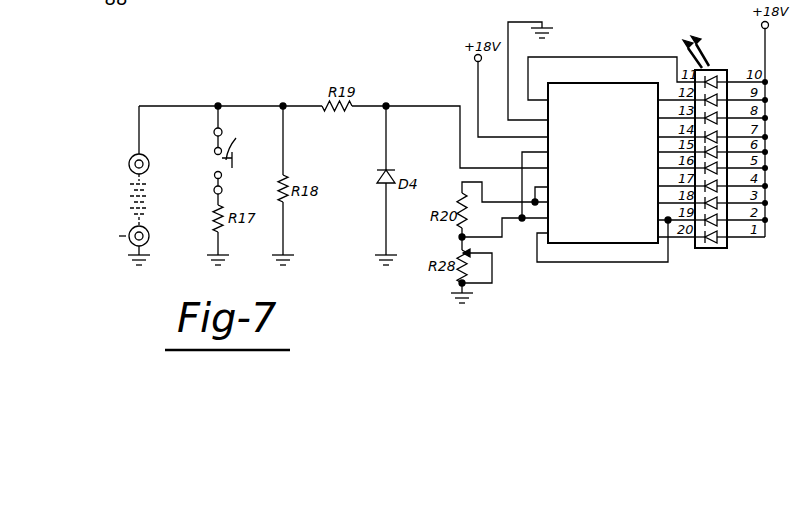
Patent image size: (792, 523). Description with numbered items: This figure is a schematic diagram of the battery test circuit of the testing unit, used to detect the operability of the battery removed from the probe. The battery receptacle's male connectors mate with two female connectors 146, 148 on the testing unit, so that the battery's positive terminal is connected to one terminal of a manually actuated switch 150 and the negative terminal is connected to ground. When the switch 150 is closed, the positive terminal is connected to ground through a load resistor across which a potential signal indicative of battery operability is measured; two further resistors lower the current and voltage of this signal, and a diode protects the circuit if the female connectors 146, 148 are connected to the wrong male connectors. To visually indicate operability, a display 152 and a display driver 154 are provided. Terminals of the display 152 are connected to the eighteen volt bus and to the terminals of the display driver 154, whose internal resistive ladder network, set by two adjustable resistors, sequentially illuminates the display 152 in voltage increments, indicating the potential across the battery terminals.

The female connector 146 is at (138, 157).
The female connector 148 is at (129, 240).
The manually actuated switch 150 is at (240, 150).
The display 152 is at (700, 250).
The display driver 154 is at (615, 163).